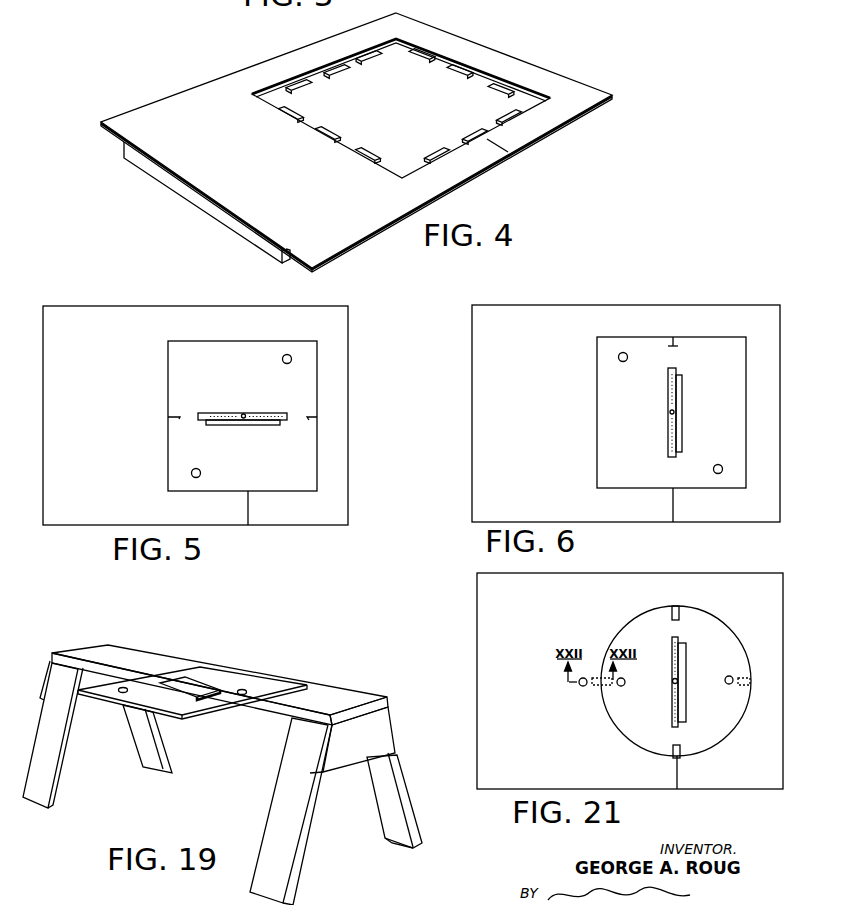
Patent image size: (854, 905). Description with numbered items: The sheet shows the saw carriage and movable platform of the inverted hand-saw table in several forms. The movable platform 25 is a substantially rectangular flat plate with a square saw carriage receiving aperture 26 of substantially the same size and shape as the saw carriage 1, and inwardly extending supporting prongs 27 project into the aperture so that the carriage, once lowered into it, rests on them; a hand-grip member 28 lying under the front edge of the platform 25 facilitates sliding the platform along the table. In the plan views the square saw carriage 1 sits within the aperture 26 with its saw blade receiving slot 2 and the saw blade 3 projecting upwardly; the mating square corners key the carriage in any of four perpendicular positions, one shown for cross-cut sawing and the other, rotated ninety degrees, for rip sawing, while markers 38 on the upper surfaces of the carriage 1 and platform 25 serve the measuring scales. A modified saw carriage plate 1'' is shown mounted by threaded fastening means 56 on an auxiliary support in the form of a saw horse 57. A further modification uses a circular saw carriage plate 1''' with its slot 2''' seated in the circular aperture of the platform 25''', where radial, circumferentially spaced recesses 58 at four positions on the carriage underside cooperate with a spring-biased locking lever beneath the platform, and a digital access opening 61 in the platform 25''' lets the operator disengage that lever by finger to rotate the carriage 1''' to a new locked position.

In FIG. 5, the saw carriage 1 is at (280, 416).
In FIG. 6, the saw carriage 1 is at (644, 412).
In FIG. 19, the saw carriage plate 1'' is at (206, 751).
In FIG. 21, the saw carriage plate 1''' is at (675, 695).
In FIG. 5, the saw blade receiving slot 2 is at (287, 391).
In FIG. 6, the saw blade receiving slot 2 is at (638, 412).
In FIG. 21, the saw blade receiving slot 2''' is at (699, 682).
In FIG. 5, the saw blade 3 is at (285, 420).
In FIG. 6, the saw blade 3 is at (676, 425).
In FIG. 4, the movable platform 25 is at (390, 142).
In FIG. 5, the movable platform 25 is at (227, 411).
In FIG. 6, the movable platform 25 is at (626, 382).
In FIG. 21, the movable platform 25''' is at (630, 663).
In FIG. 4, the saw carriage receiving aperture 26 is at (412, 42).
In FIG. 4, the supporting prongs 27 is at (463, 72).
In FIG. 4, the hand-grip member 28 is at (180, 188).
In FIG. 5, the markers 38 is at (170, 418).
In FIG. 6, the markers 38 is at (674, 345).
In FIG. 19, the threaded fastening means 56 is at (207, 672).
In FIG. 19, the saw horse 57 is at (335, 698).
In FIG. 21, the recesses 58 is at (598, 678).
In FIG. 21, the digital access opening 61 is at (583, 683).